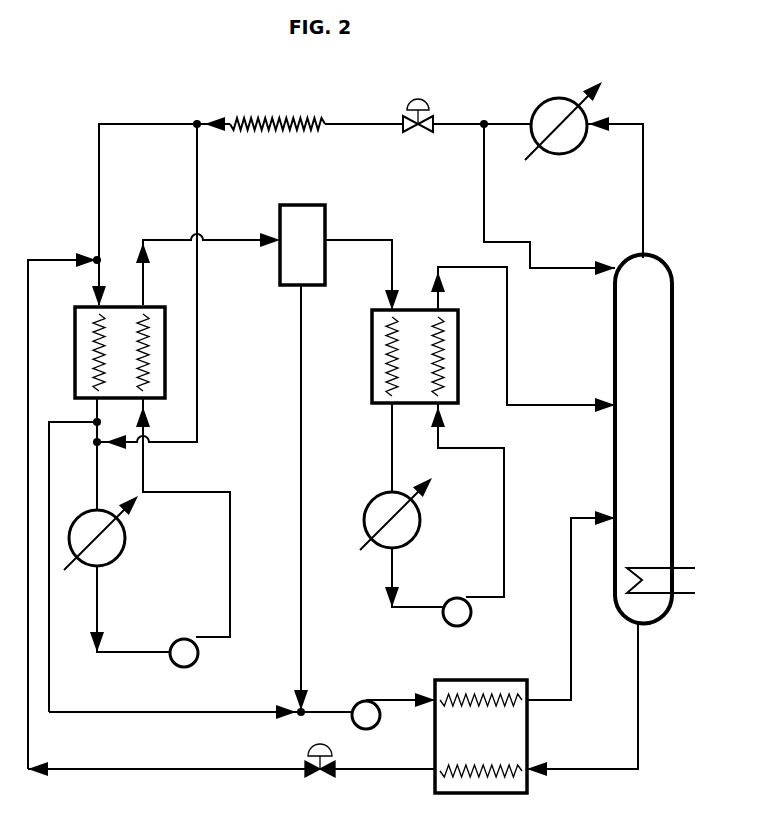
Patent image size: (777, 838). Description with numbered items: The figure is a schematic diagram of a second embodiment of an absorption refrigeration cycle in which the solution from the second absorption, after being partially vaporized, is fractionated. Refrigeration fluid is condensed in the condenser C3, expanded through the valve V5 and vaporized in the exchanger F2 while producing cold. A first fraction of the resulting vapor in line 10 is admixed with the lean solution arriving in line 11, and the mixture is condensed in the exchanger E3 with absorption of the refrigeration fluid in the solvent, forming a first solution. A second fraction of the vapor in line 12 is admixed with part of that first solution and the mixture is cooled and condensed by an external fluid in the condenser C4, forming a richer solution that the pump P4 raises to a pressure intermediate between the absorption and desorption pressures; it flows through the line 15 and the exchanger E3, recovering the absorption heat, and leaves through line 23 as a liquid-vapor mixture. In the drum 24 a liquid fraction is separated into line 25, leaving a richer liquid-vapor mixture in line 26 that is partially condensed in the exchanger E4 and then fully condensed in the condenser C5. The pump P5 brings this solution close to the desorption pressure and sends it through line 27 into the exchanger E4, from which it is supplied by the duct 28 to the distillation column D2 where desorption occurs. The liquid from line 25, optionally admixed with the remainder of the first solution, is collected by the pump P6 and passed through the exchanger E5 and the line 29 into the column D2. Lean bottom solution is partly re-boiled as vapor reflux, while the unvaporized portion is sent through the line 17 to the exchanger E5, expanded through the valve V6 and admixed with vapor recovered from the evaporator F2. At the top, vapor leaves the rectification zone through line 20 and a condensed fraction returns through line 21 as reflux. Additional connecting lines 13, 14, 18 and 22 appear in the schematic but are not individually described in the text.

The line 10 is at (128, 122).
The line 11 is at (49, 258).
The line 12 is at (197, 180).
The conduit 13 is at (93, 412).
The conduit 14 is at (97, 484).
The line 15 is at (230, 552).
The line 17 is at (597, 768).
The conduit 18 is at (147, 712).
The line 20 is at (643, 208).
The line 21 is at (530, 243).
The conduit 22 is at (442, 127).
The line 23 is at (220, 238).
The drum 24 is at (305, 205).
The line 25 is at (301, 440).
The line 26 is at (374, 240).
The line 27 is at (504, 527).
The duct 28 is at (508, 345).
The line 29 is at (570, 625).
The exchanger F2 is at (280, 117).
The valve V5 is at (418, 99).
The condenser C3 is at (533, 112).
The exchanger E3 is at (162, 305).
The condenser C4 is at (82, 510).
The pump P4 is at (177, 640).
The exchanger E4 is at (372, 310).
The condenser C5 is at (367, 498).
The pump P5 is at (447, 626).
The pump P6 is at (361, 700).
The exchanger E5 is at (490, 680).
The distillation column D2 is at (614, 466).
The valve V6 is at (318, 782).